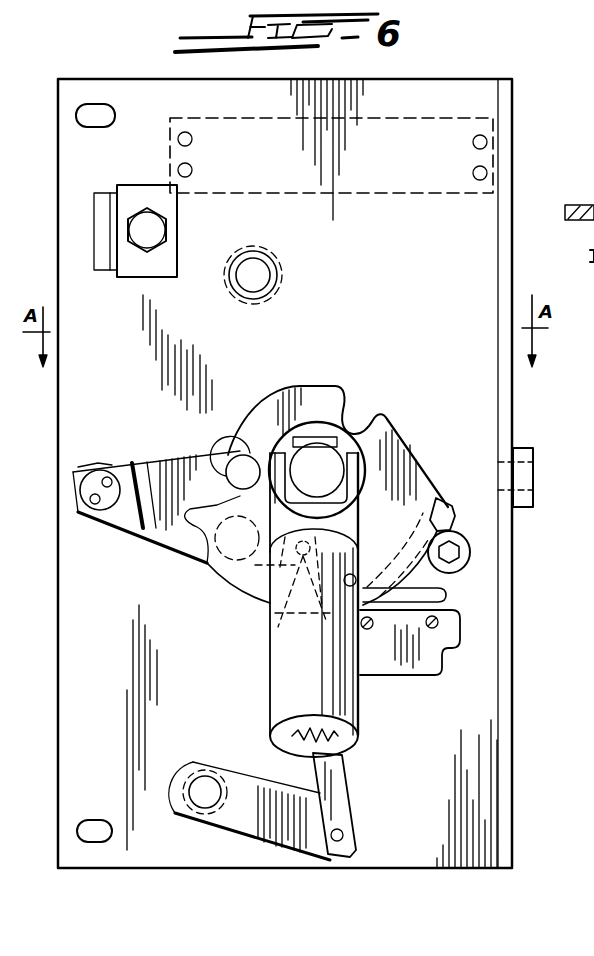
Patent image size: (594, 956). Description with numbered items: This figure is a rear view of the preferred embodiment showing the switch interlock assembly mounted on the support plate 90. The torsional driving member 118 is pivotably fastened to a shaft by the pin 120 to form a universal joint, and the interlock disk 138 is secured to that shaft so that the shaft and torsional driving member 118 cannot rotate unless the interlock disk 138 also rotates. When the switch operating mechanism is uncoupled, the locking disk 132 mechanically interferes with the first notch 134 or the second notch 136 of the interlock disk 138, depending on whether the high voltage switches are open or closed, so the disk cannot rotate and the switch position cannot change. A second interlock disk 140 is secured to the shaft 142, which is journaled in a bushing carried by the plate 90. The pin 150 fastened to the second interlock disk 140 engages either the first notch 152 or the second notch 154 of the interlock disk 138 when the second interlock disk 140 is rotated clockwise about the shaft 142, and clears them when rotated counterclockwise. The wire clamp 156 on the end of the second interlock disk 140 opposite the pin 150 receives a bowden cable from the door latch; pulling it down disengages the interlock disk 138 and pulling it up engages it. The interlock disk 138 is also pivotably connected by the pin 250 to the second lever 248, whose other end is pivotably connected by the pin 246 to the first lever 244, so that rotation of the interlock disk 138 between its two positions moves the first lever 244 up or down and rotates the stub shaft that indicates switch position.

The support plate 90 is at (460, 743).
The torsional driving member 118 is at (282, 670).
The pin 120 is at (365, 462).
The locking disk 132 is at (463, 567).
The first notch 134 is at (190, 545).
The second notch 136 is at (453, 503).
The interlock disk 138 is at (428, 476).
The second interlock disk 140 is at (160, 457).
The shaft 142 is at (233, 555).
The pin 150 is at (228, 470).
The first notch 152 is at (236, 450).
The second notch 154 is at (346, 432).
The wire clamp 156 is at (110, 502).
The first lever 244 is at (245, 765).
The pin 246 is at (343, 832).
The second lever 248 is at (340, 771).
The pin 250 is at (298, 556).